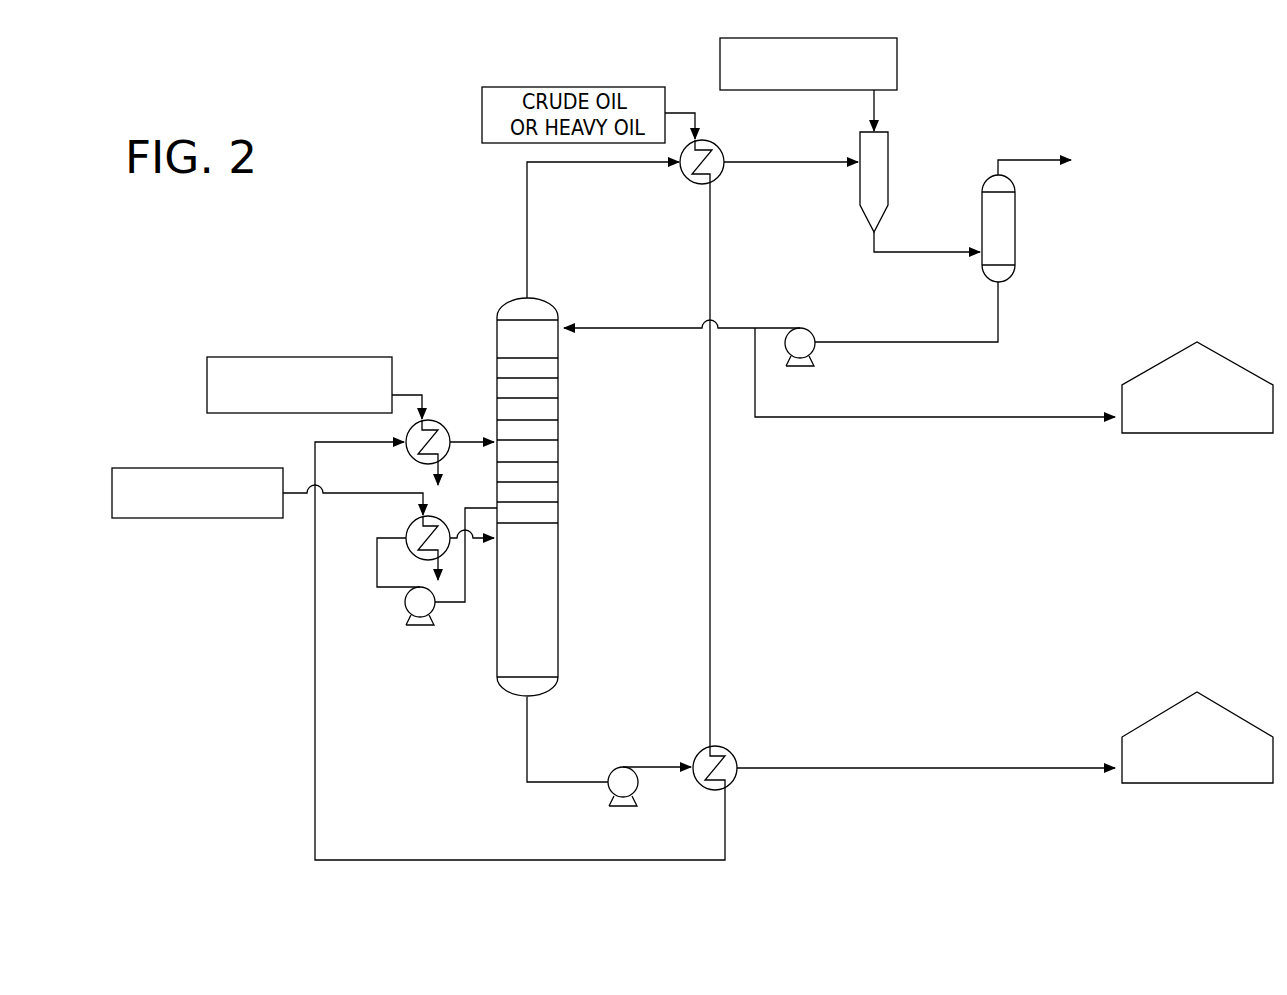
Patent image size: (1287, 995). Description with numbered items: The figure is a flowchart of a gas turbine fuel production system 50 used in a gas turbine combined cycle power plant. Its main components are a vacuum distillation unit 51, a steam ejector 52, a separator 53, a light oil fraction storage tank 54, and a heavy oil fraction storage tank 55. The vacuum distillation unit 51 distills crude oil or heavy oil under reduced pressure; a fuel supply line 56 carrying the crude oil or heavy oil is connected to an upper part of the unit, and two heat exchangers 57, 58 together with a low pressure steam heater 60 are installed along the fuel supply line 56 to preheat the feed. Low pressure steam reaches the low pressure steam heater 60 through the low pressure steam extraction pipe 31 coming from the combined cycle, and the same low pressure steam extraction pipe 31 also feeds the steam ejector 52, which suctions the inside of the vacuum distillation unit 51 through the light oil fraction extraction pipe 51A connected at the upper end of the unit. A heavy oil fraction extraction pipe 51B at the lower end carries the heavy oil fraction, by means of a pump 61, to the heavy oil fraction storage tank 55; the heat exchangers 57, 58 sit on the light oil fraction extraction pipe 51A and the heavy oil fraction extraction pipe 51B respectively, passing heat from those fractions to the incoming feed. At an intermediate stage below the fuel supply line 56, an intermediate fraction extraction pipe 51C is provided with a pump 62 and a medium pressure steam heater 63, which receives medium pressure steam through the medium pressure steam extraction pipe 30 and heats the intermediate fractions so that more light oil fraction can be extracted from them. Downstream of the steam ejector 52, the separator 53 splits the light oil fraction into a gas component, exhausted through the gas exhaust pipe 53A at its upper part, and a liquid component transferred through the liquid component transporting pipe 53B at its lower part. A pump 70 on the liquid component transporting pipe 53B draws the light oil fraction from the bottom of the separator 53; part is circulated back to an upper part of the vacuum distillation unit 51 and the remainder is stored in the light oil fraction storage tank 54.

The medium pressure steam extraction pipe 30 is at (293, 494).
The low pressure steam extraction pipe 31 is at (877, 105).
The gas turbine fuel production system 50 is at (420, 149).
The vacuum distillation unit 51 is at (540, 598).
The light oil fraction extraction pipe 51A is at (528, 244).
The heavy oil fraction extraction pipe 51B is at (530, 748).
The intermediate fraction extraction pipe 51C is at (452, 618).
The steam ejector 52 is at (880, 168).
The separator 53 is at (1005, 235).
The gas exhaust pipe 53A is at (1030, 158).
The liquid component transporting pipe 53B is at (1000, 313).
The light oil fraction storage tank 54 is at (1200, 434).
The heavy oil fraction storage tank 55 is at (1225, 784).
The fuel supply line 56 is at (712, 546).
The heat exchanger 57 is at (722, 176).
The heat exchanger 58 is at (725, 748).
The low pressure steam heater 60 is at (440, 421).
The pump 61 is at (623, 796).
The pump 62 is at (417, 610).
The medium pressure steam heater 63 is at (420, 534).
The pump 70 is at (800, 360).